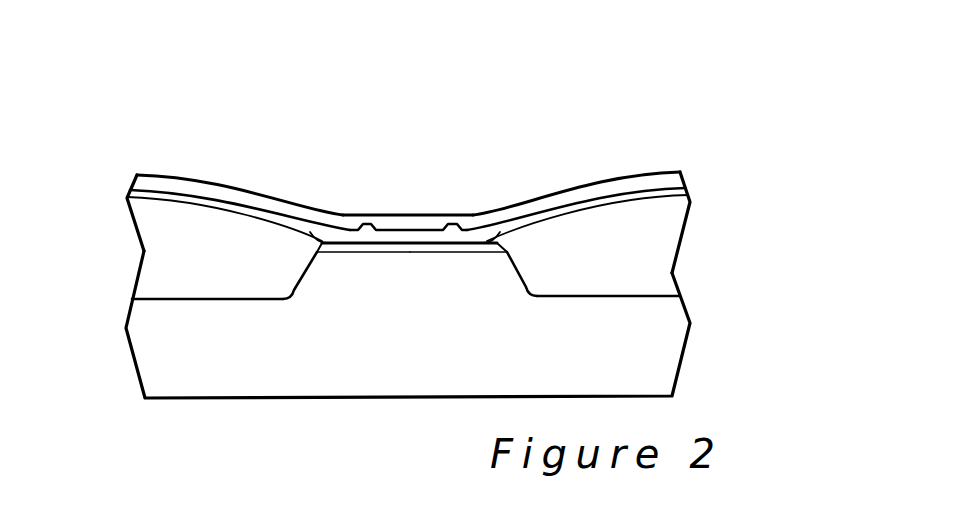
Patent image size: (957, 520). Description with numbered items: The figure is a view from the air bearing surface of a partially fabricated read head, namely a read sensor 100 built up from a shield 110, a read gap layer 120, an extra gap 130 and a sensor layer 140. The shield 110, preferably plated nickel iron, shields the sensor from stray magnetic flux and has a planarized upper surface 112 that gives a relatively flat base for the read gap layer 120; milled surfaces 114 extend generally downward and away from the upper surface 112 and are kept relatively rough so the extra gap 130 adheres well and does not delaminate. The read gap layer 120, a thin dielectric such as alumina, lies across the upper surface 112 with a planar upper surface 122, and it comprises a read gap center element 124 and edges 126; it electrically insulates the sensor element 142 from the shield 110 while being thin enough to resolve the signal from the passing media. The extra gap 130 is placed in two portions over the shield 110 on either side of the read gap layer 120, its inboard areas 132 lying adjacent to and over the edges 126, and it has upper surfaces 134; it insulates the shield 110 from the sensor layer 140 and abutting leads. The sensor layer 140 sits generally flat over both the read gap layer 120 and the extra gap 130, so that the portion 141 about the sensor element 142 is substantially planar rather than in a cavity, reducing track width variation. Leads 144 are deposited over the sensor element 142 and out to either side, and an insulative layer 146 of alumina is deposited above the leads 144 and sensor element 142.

The read sensor 100 is at (700, 160).
The shield 110 is at (165, 352).
The upper surface 112 is at (432, 250).
The milled surfaces 114 is at (285, 286).
The read gap layer 120 is at (468, 249).
The planar upper surface 122 is at (410, 248).
The read gap center element 124 is at (346, 252).
The edges 126 is at (314, 253).
The extra gap 130 is at (167, 260).
The inboard areas 132 is at (315, 237).
The upper surfaces 134 is at (173, 192).
The sensor layer 140 is at (580, 188).
The portion 141 is at (377, 198).
The sensor element 142 is at (428, 230).
The leads 144 is at (643, 190).
The insulative layer 146 is at (237, 192).